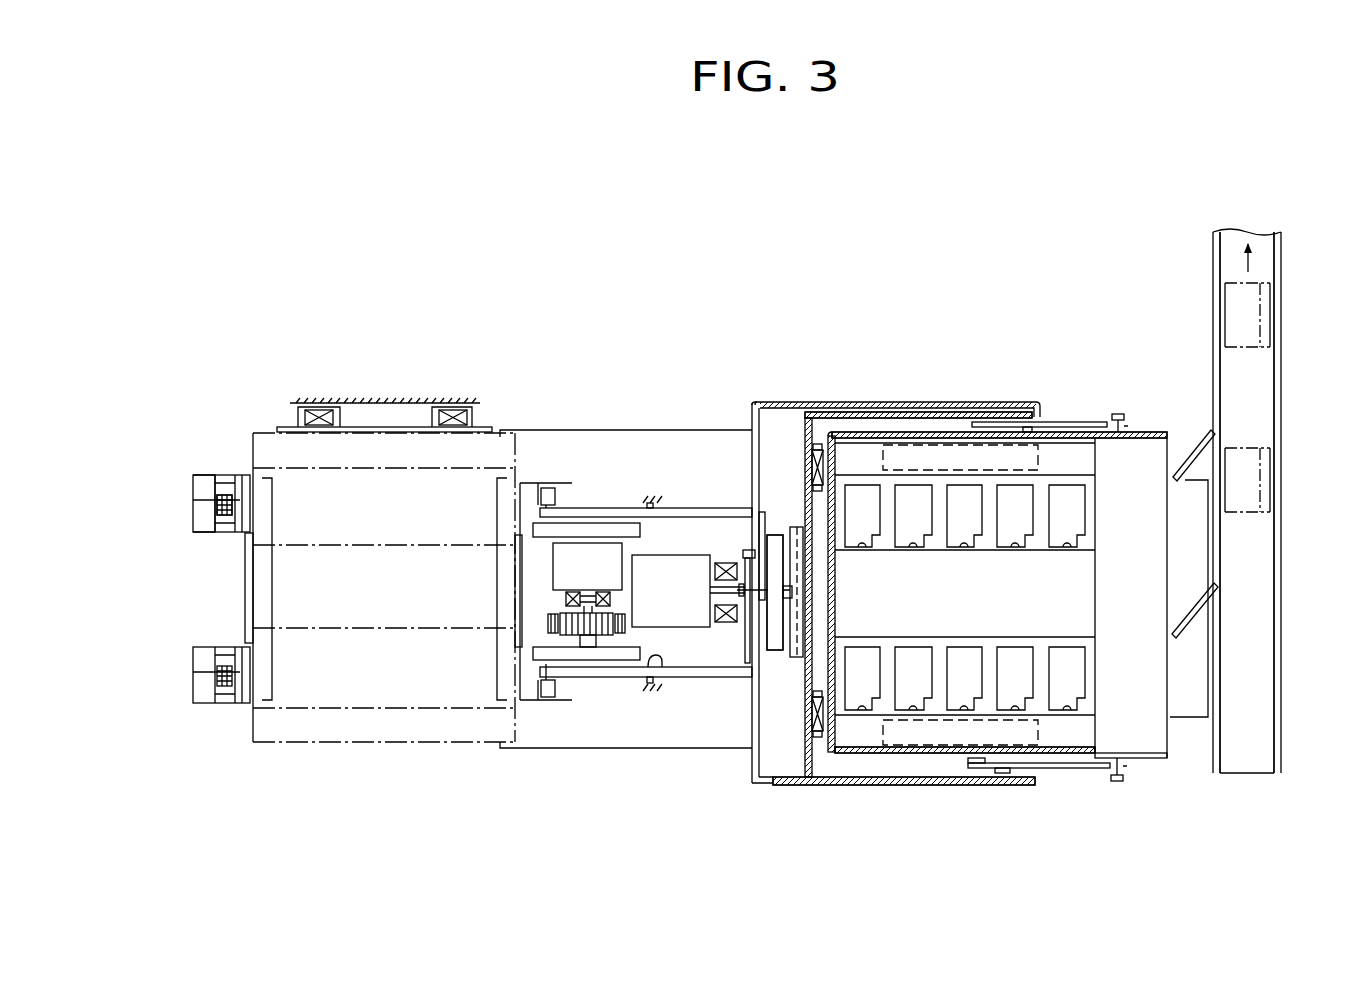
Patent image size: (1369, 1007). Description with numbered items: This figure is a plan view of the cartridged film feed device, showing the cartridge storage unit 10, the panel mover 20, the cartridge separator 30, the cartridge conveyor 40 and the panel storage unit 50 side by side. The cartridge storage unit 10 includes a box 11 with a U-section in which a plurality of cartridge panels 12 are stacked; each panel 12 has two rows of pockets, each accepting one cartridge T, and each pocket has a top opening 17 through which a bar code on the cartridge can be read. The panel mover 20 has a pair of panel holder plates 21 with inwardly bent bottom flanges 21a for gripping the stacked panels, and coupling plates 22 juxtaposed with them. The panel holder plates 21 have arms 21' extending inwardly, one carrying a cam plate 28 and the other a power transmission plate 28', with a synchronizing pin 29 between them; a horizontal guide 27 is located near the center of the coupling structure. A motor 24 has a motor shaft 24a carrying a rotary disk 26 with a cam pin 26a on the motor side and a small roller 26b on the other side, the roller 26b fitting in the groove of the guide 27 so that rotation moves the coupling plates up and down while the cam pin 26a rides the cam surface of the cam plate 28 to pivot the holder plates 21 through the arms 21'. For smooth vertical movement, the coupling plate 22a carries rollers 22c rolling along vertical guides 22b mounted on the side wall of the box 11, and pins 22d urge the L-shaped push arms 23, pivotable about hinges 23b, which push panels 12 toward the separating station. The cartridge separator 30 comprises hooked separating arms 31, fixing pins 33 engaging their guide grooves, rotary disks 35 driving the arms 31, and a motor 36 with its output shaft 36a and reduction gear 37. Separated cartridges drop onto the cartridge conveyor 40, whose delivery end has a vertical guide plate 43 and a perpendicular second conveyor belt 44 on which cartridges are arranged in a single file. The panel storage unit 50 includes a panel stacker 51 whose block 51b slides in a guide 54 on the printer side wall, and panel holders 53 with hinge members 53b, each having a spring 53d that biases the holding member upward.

The cartridge storage unit 10 is at (1058, 408).
The box 11 is at (1140, 432).
The cartridge panel 12 is at (340, 745).
The top opening 17 is at (1032, 687).
The panel mover 20 is at (702, 453).
The panel holder plate 21 is at (997, 646).
The arm 21' is at (712, 571).
The inwardly bent bottom flange 21a is at (908, 740).
The coupling plate 22 is at (848, 786).
The coupling plate 22a is at (768, 781).
The vertical guide 22b is at (814, 738).
The roller 22c is at (806, 760).
The pin 22d is at (1005, 773).
The push arm 23 is at (1055, 768).
The hinge 23b is at (1117, 782).
The motor 24 is at (642, 562).
The motor shaft 24a is at (748, 552).
The rotary disk 26 is at (778, 612).
The cam pin 26a is at (720, 588).
The small roller 26b is at (800, 580).
The horizontal guide 27 is at (756, 685).
The cam plate 28 is at (724, 593).
The power transmission plate 28' is at (788, 494).
The synchronizing pin 29 is at (722, 562).
The cartridge separator 30 is at (583, 493).
The separating arm 31 is at (598, 680).
The fixing pin 33 is at (652, 682).
The rotary disk 35 is at (535, 652).
The motor 36 is at (560, 565).
The motor output shaft 36a is at (570, 598).
The reduction gear 37 is at (548, 627).
The cartridge conveyor 40 is at (1292, 560).
The vertical guide plate 43 is at (1192, 455).
The second conveyor belt 44 is at (1262, 697).
The panel storage unit 50 is at (387, 383).
The panel stacker 51 is at (402, 427).
The block 51b is at (450, 418).
The panel holder 53 is at (546, 470).
The hinge member 53b is at (205, 512).
The spring 53d is at (211, 503).
The guide 54 is at (298, 417).
The cartridge T is at (1248, 305).